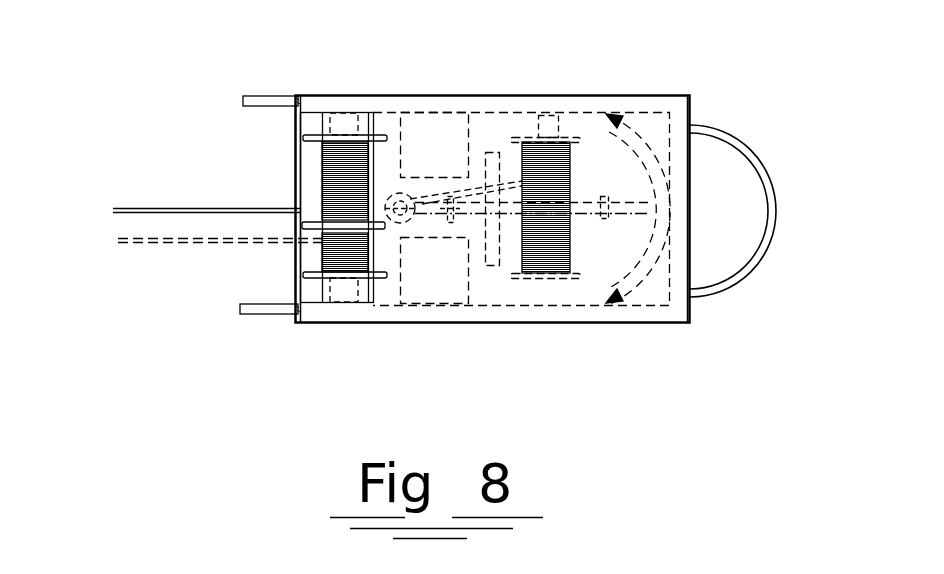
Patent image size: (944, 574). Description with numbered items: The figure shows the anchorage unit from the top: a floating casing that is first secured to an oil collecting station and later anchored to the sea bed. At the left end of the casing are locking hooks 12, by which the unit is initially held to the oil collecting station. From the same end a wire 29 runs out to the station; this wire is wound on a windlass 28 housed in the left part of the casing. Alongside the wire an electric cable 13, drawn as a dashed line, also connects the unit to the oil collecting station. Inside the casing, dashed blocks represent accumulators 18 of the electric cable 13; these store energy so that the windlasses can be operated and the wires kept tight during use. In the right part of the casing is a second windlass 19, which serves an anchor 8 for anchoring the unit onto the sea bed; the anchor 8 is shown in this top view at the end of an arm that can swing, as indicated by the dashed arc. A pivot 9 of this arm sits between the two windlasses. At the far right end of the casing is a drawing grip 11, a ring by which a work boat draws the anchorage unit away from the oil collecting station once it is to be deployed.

The anchor 8 is at (589, 210).
The pivot bearing 9 is at (475, 192).
The drawing grip 11 is at (738, 138).
The locking hooks 12 is at (253, 96).
The electric cable 13 is at (199, 242).
The accumulators 18 is at (427, 130).
The windlass 19 is at (528, 140).
The windlass 28 is at (327, 133).
The wire 29 is at (196, 210).